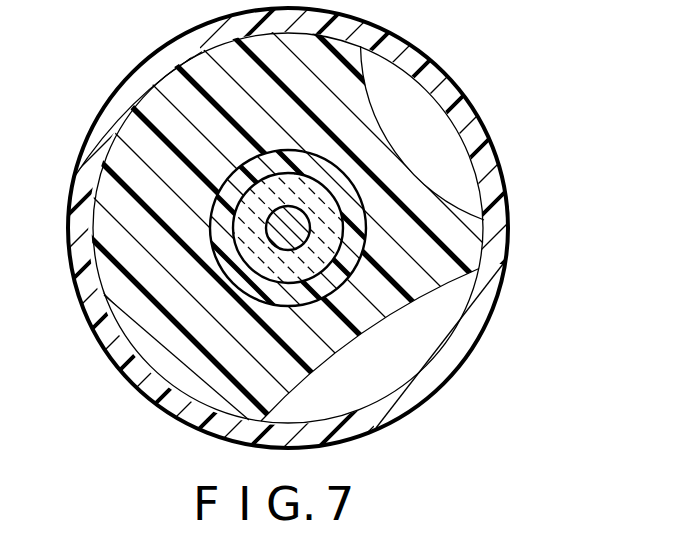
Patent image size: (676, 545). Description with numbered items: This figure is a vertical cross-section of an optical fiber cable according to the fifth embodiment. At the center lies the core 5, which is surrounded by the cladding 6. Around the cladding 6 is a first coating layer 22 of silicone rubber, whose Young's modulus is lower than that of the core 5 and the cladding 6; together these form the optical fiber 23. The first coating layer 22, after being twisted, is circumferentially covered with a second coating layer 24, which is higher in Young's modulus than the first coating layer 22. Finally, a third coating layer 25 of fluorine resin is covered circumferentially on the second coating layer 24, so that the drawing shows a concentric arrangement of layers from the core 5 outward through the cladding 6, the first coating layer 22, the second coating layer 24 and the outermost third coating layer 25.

The core 5 is at (302, 228).
The cladding 6 is at (328, 205).
The first coating layer 22 is at (358, 255).
The optical fiber 23 is at (333, 143).
The second coating layer 24 is at (413, 362).
The third coating layer 25 is at (127, 363).